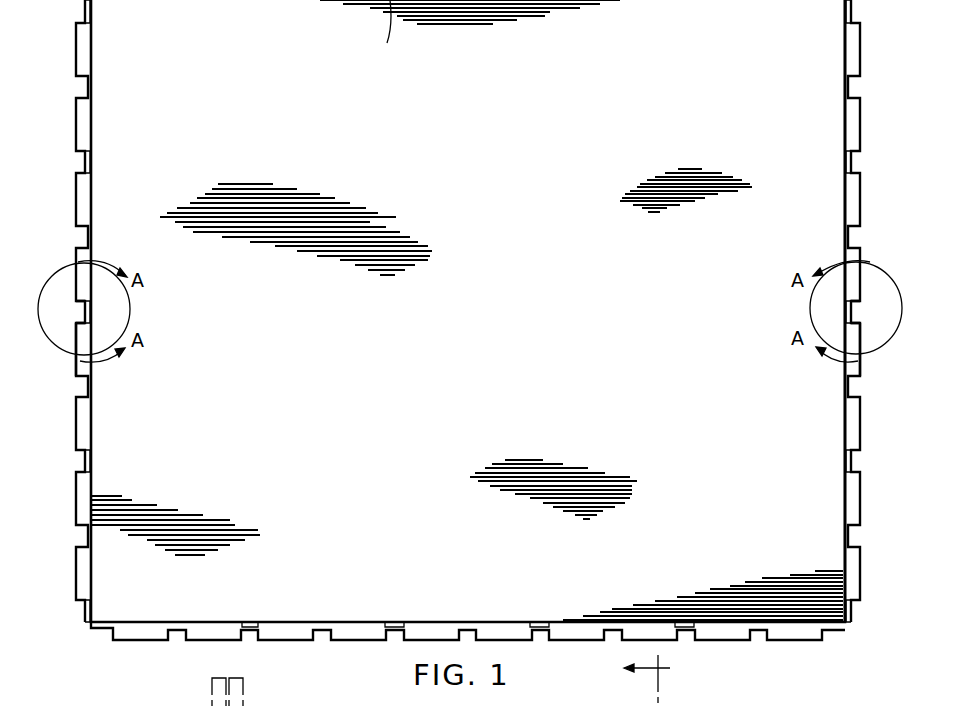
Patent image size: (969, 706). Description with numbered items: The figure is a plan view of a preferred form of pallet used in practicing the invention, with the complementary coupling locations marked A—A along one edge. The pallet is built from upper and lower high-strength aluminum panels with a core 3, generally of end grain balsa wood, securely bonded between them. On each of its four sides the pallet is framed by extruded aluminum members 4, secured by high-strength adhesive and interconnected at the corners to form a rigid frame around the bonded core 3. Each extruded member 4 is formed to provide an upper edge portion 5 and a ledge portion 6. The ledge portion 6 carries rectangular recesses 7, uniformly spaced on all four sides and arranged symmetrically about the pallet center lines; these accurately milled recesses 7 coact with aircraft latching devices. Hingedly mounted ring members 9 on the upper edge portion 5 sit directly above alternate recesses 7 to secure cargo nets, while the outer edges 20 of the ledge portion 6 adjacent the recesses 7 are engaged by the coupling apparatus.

The core 3 is at (638, 679).
The extruded aluminum member 4 is at (113, 631).
The upper edge portion 5 is at (843, 500).
The ledge portion 6 is at (83, 277).
The rectangular recess 7 is at (78, 313).
The ring member 9 is at (88, 317).
The outer edge 20 is at (75, 340).